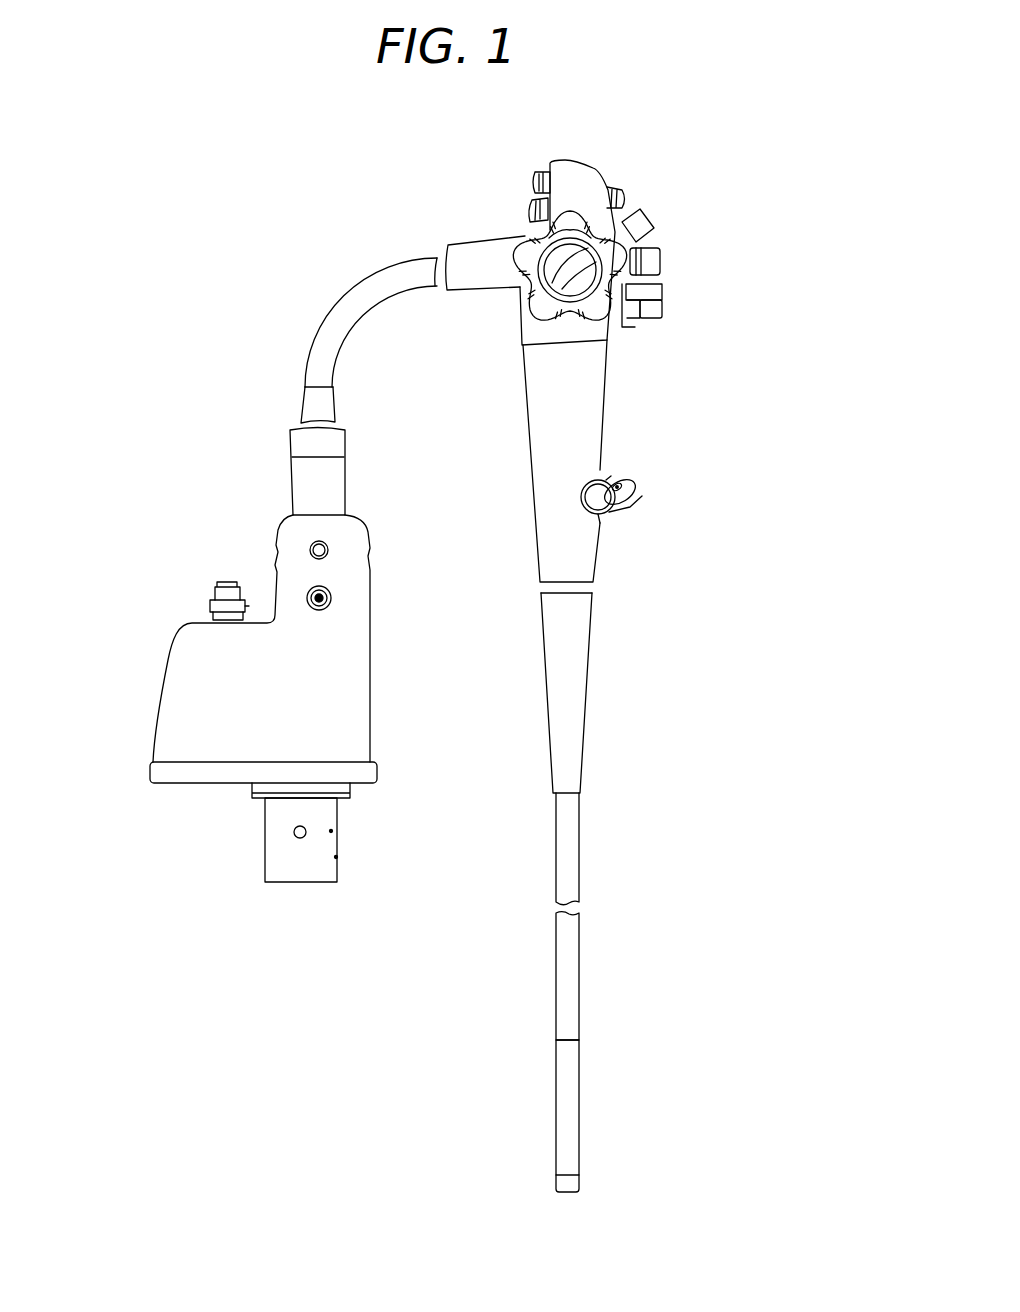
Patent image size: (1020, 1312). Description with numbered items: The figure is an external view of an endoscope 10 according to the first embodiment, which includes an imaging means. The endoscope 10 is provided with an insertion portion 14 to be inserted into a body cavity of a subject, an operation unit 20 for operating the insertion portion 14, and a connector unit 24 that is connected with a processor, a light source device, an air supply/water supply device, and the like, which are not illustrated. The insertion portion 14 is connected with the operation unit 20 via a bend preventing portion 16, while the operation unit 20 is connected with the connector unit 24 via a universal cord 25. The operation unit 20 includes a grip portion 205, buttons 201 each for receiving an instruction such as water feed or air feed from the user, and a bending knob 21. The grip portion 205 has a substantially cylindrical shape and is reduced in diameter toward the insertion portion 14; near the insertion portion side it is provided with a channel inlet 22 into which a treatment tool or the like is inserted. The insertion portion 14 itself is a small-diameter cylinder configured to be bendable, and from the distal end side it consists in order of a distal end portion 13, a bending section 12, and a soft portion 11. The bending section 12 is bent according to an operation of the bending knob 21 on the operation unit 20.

The endoscope 10 is at (137, 203).
The soft portion 11 is at (590, 797).
The bending section 12 is at (590, 1040).
The distal end portion 13 is at (570, 1182).
The insertion portion 14 is at (690, 870).
The bend preventing portion 16 is at (575, 677).
The operation unit 20 is at (688, 402).
The bending knob 21 is at (653, 253).
The buttons 201 is at (660, 293).
The grip portion 205 is at (590, 412).
The channel inlet 22 is at (595, 538).
The connector unit 24 is at (195, 682).
The universal cord 25 is at (358, 295).